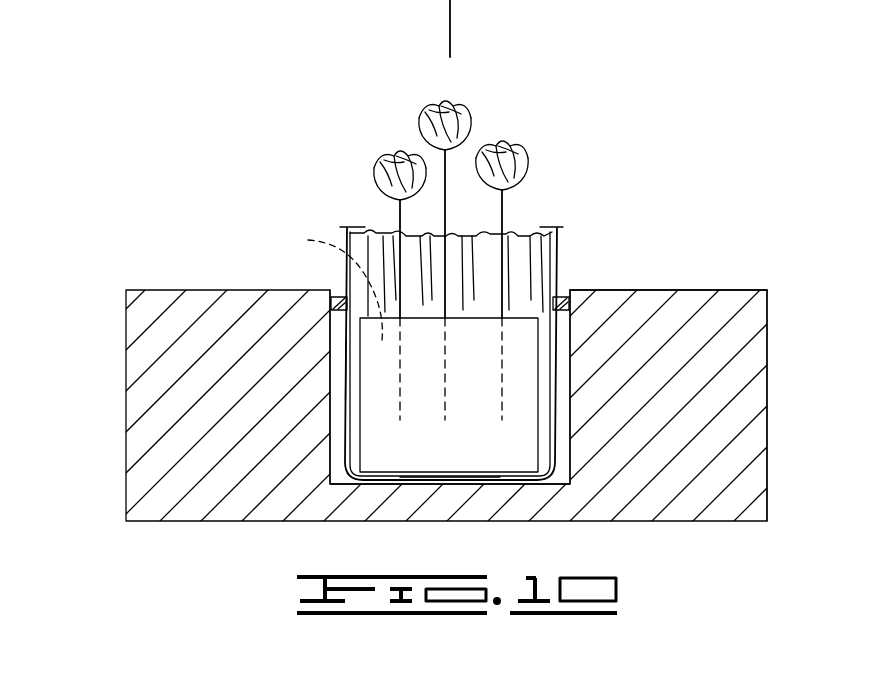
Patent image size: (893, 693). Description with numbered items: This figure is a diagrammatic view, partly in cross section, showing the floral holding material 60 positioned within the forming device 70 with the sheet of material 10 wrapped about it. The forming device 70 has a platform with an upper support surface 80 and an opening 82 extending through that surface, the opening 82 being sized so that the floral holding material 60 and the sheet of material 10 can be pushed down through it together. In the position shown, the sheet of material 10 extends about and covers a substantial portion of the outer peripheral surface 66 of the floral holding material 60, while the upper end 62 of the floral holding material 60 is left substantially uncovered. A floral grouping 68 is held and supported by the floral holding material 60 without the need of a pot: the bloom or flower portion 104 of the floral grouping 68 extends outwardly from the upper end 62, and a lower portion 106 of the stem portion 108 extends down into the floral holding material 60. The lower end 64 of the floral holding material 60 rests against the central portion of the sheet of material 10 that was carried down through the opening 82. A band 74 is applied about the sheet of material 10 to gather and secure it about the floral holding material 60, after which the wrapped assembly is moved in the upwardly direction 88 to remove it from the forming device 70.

The sheet of material 10 is at (338, 220).
The floral holding material 60 is at (534, 306).
The upper end 62 is at (378, 228).
The lower end 64 is at (470, 473).
The outer peripheral surface 66 is at (352, 368).
The floral grouping 68 is at (540, 120).
The forming device 70 is at (122, 295).
The band 74 is at (562, 286).
The upper support surface 80 is at (689, 291).
The opening 82 is at (332, 467).
The upwardly direction 88 is at (449, 33).
The bloom or flower portion 104 is at (383, 149).
The lower portion 106 is at (320, 284).
The stem portion 108 is at (505, 213).